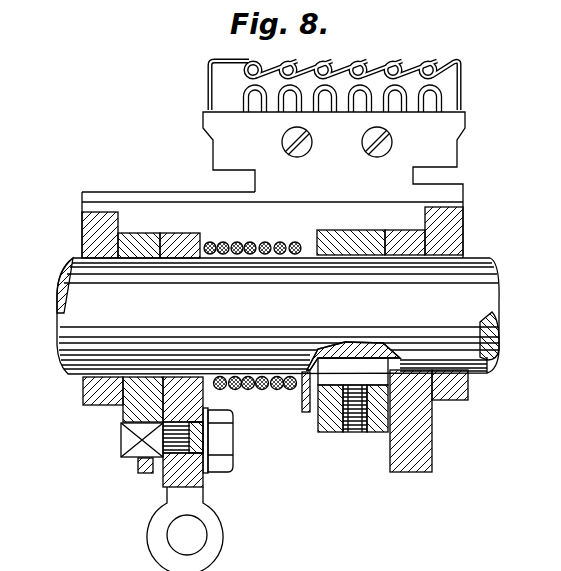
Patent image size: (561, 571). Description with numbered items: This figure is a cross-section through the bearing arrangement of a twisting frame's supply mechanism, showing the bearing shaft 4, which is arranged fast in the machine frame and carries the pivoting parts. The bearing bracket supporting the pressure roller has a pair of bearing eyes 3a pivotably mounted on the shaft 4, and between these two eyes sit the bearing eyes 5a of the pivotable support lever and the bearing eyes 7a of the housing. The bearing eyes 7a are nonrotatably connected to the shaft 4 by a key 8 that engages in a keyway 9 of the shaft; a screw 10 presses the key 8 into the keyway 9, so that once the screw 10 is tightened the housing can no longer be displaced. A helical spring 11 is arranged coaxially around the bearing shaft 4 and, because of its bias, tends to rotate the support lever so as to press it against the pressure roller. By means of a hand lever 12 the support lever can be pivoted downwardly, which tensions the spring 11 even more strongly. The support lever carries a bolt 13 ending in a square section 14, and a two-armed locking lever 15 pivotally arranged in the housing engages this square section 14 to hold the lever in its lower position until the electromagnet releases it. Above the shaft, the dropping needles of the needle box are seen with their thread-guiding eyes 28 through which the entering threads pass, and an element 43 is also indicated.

The lead wire 43 is at (417, 0).
The thread-guiding eye 28 is at (445, 102).
The bearing shaft 4 is at (484, 297).
The keyway 9 is at (490, 370).
The bearing eyes 3a is at (84, 406).
The bearing eyes 7a is at (124, 408).
The bearing eyes 5a is at (195, 474).
The helical spring 11 is at (277, 392).
The key 8 is at (327, 408).
The screw 10 is at (352, 375).
The bolt 13 is at (178, 440).
The square section 14 is at (143, 451).
The two-armed locking lever 15 is at (138, 468).
The hand lever 12 is at (197, 540).